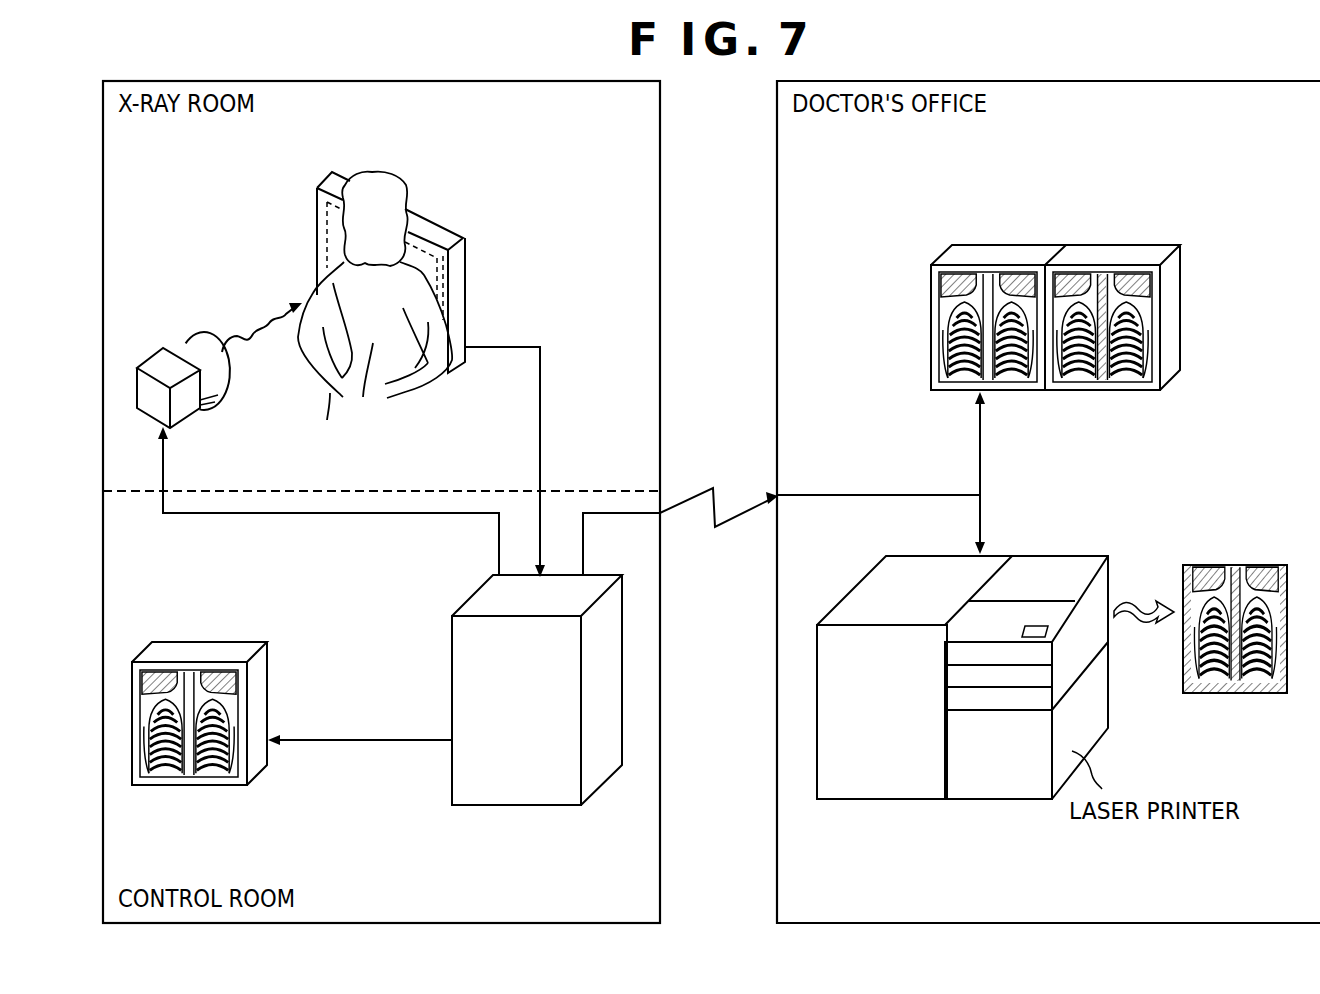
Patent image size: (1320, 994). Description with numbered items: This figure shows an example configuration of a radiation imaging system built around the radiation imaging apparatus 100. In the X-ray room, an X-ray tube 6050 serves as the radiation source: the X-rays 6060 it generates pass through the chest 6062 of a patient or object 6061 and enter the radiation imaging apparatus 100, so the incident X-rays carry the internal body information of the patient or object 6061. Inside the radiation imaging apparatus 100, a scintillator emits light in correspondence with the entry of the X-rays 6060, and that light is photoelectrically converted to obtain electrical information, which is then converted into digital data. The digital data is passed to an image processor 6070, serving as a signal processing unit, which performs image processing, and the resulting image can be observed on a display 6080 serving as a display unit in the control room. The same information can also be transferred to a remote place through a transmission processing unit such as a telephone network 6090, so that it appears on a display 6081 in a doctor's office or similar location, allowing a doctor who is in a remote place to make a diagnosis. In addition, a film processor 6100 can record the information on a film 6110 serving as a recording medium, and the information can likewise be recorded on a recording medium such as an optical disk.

The X-ray tube 6050 is at (175, 345).
The X-rays 6060 is at (258, 352).
The patient or object 6061 is at (383, 173).
The chest 6062 is at (363, 397).
The radiation imaging apparatus 100 is at (437, 242).
The image processor 6070 is at (452, 783).
The display 6080 is at (172, 650).
The display 6081 is at (968, 244).
The telephone network 6090 is at (697, 490).
The film processor 6100 is at (930, 799).
The film 6110 is at (1216, 565).